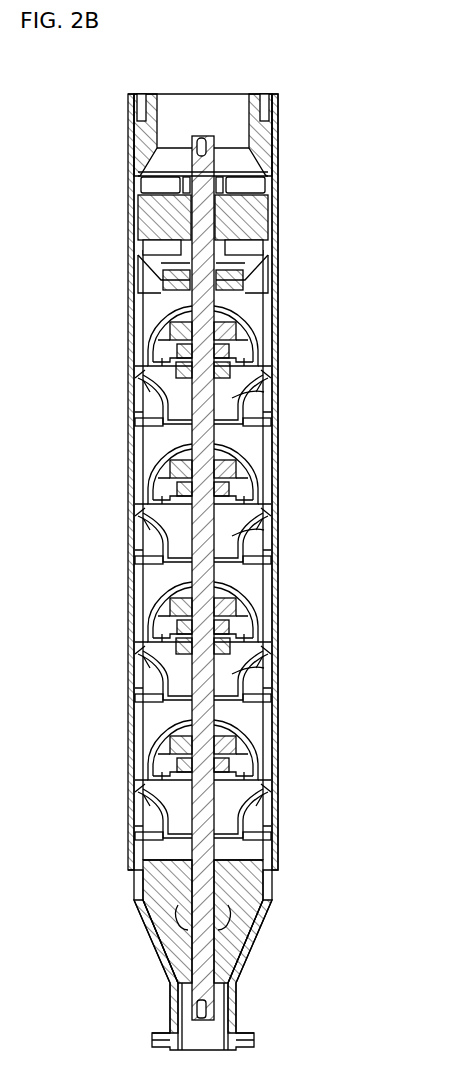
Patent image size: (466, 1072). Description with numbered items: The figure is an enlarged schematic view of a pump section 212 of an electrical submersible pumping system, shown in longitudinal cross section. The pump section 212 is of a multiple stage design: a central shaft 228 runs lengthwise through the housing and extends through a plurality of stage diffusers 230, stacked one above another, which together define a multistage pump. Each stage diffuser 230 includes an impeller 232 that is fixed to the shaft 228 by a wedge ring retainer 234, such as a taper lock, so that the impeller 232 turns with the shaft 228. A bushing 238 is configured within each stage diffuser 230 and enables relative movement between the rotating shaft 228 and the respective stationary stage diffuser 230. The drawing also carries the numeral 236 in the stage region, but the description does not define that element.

The pump section 212 is at (84, 918).
The shaft 228 is at (196, 218).
The stage diffuser 230 is at (144, 405).
The impeller 232 is at (230, 407).
The wedge ring retainer 234 is at (182, 378).
The impeller 236 is at (190, 332).
The bushing 238 is at (194, 452).